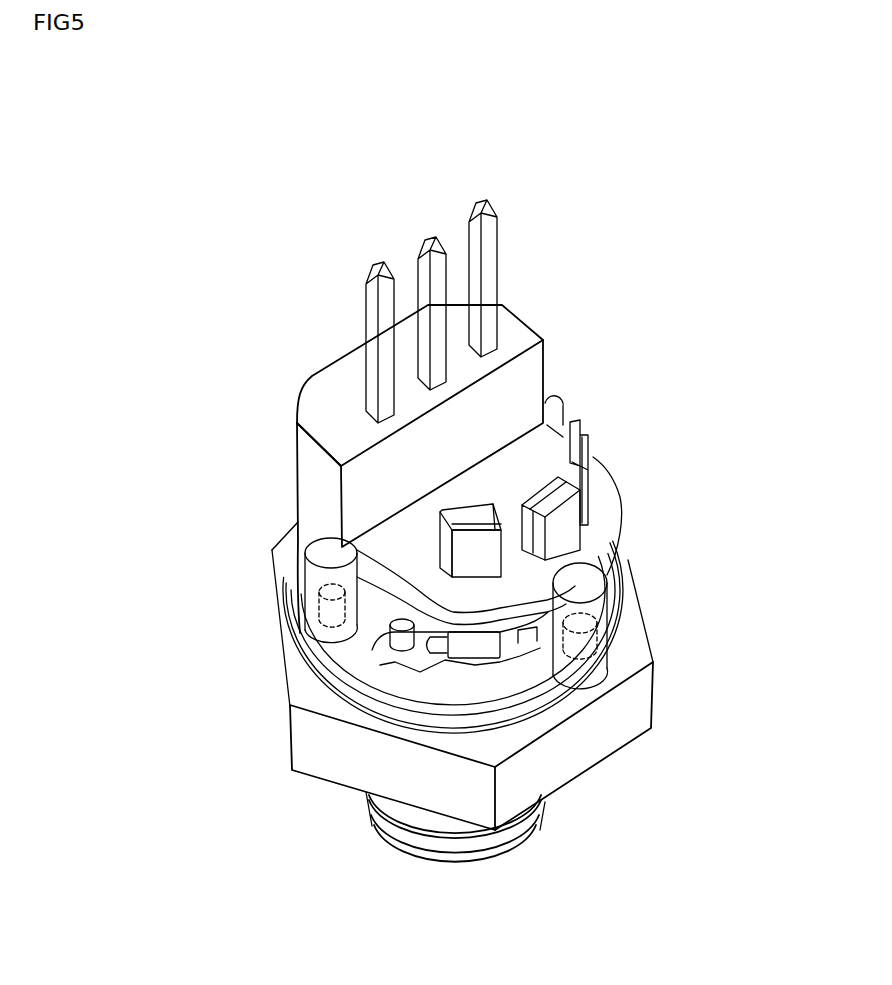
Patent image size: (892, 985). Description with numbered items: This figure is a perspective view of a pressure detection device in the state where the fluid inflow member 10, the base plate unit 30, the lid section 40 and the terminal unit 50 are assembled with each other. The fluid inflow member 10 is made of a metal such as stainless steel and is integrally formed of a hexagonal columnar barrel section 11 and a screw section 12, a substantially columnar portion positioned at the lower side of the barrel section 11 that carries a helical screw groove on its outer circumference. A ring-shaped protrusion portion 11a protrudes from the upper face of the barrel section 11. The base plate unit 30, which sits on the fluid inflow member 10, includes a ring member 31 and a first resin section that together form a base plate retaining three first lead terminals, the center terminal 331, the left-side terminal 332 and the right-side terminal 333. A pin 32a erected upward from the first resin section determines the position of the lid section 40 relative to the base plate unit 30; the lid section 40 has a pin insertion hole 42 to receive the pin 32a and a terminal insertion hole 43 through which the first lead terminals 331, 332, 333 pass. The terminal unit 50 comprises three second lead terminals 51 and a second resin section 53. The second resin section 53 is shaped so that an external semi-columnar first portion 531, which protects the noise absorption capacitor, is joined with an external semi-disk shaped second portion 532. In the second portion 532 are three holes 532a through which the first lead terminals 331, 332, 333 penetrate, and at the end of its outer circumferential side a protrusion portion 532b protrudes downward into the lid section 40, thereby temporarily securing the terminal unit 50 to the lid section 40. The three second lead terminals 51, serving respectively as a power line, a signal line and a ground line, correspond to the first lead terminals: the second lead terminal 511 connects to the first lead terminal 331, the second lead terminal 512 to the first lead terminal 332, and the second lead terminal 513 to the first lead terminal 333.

The fluid inflow member 10 is at (282, 783).
The barrel section 11 is at (628, 702).
The protrusion portion 11a is at (382, 720).
The screw section 12 is at (373, 828).
The base plate unit 30 is at (432, 727).
The ring member 31 is at (408, 708).
The pin 32a is at (385, 640).
The first lead terminal 331 is at (572, 527).
The first lead terminal 332 is at (560, 690).
The first lead terminal 333 is at (590, 461).
The lid section 40 is at (361, 624).
The pin insertion hole 42 is at (395, 648).
The terminal insertion hole 43 is at (453, 572).
The terminal unit 50 is at (303, 370).
The second lead terminal 51 is at (785, 63).
The second lead terminal 511 is at (417, 257).
The second lead terminal 512 is at (367, 323).
The second lead terminal 513 is at (473, 227).
The second resin section 53 is at (120, 498).
The first portion 531 is at (300, 417).
The second portion 532 is at (312, 548).
The hole 532a is at (592, 493).
The protrusion portion 532b is at (318, 593).